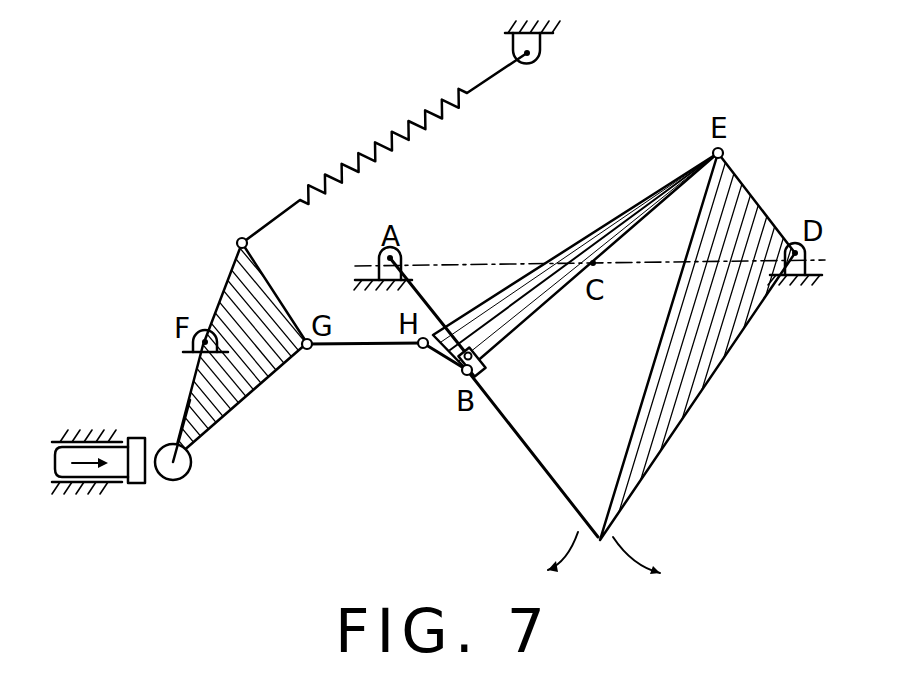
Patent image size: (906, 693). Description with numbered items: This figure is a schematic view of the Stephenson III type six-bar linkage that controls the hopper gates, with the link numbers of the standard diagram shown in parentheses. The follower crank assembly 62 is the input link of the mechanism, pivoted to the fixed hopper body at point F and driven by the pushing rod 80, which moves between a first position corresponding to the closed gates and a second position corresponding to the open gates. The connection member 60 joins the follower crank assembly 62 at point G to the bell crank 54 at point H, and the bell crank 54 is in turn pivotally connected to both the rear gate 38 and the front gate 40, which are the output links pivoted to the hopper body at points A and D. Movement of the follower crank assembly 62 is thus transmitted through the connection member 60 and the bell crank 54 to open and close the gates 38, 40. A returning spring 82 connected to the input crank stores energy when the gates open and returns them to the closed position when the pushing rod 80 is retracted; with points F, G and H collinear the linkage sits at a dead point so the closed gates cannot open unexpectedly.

The returning spring 82 is at (378, 148).
The follower crank assembly 62 is at (233, 417).
The connection member 60 is at (367, 347).
The bell crank 54 is at (597, 233).
The rear gate 38 is at (527, 450).
The front gate 40 is at (713, 372).
The pushing rod 80 is at (83, 482).